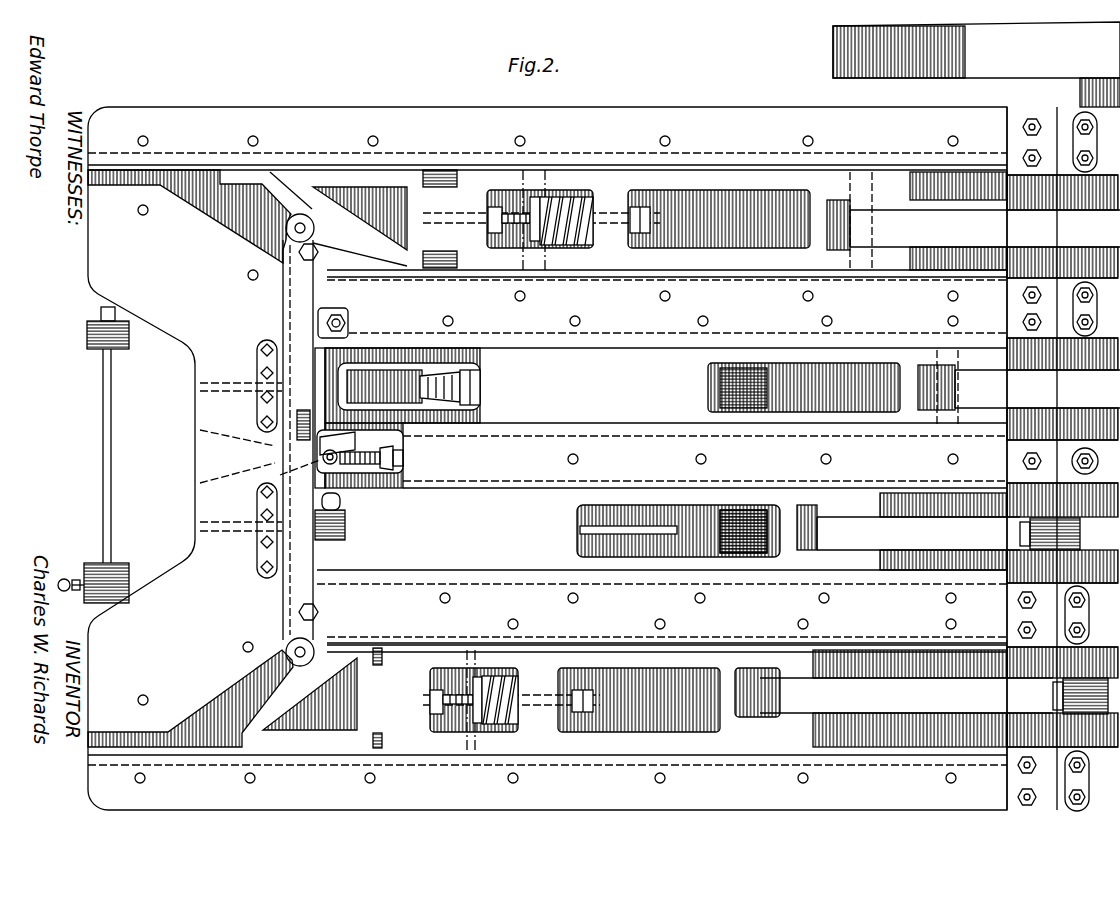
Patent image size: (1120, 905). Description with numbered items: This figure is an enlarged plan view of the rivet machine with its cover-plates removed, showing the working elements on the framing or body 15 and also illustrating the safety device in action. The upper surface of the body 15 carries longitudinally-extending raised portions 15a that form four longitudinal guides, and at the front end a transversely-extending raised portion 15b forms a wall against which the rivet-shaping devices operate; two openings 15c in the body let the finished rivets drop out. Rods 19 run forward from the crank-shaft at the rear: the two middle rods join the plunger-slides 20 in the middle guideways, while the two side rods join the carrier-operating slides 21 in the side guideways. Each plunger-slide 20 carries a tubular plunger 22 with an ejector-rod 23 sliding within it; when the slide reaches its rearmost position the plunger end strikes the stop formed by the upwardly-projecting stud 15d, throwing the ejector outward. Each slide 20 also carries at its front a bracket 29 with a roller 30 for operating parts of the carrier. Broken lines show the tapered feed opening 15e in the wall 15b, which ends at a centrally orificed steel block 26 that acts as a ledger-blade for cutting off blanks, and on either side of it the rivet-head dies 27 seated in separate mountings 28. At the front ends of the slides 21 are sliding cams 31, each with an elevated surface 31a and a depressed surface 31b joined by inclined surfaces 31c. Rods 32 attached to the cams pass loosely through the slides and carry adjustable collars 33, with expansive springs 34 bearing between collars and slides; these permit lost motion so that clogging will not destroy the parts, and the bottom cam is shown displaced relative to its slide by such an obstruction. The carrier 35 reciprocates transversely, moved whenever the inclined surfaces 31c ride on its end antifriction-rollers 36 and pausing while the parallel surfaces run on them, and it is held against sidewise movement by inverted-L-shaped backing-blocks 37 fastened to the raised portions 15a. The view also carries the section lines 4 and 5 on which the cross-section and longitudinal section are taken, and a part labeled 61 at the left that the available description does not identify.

The section line 4- 4 is at (441, 350).
The section line 5- 5 is at (192, 383).
The framing or body 15 is at (547, 445).
The longitudinally-extending raised portions 15a is at (547, 451).
The transversely-extending raised portion 15b is at (220, 567).
The openings 15c is at (406, 403).
The upwardly-projecting stud 15d is at (748, 585).
The longitudinally-extending opening 15e is at (205, 453).
The rods 19 is at (1020, 388).
The plunger-slides 20 is at (527, 456).
The carrier-operating slides 21 is at (591, 460).
The plungers 22 is at (466, 383).
The ejector-rods 23 is at (583, 528).
The steel block 26 is at (262, 480).
The rivet-head dies 27 is at (256, 568).
The separate mountings 28 is at (262, 398).
The bracket 29 is at (468, 432).
The rollers 30 is at (440, 432).
The sliding cams 31 is at (333, 182).
The elevated surface 31a is at (370, 650).
The depressed surface 31b is at (198, 763).
The inclined surfaces 31c is at (283, 190).
The rods 32 is at (520, 228).
The collars 33 is at (535, 241).
The expansive springs 34 is at (570, 235).
The carrier 35 is at (300, 320).
The antifriction-rollers 36 is at (288, 232).
The inverted-L-shaped backing-blocks 37 is at (330, 312).
The rod 61 is at (103, 457).